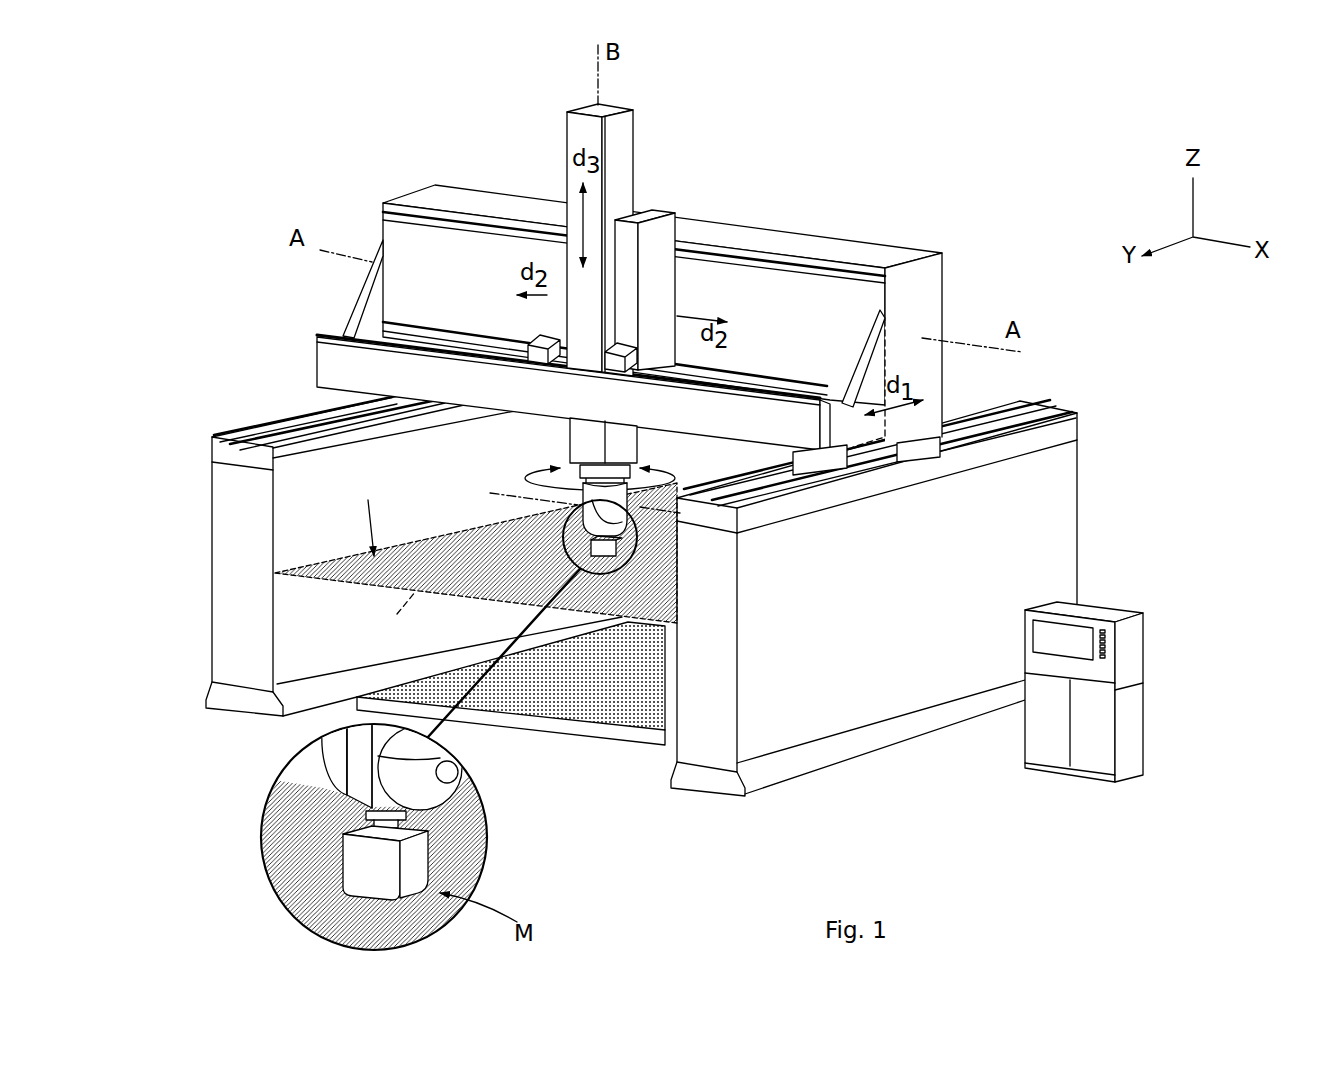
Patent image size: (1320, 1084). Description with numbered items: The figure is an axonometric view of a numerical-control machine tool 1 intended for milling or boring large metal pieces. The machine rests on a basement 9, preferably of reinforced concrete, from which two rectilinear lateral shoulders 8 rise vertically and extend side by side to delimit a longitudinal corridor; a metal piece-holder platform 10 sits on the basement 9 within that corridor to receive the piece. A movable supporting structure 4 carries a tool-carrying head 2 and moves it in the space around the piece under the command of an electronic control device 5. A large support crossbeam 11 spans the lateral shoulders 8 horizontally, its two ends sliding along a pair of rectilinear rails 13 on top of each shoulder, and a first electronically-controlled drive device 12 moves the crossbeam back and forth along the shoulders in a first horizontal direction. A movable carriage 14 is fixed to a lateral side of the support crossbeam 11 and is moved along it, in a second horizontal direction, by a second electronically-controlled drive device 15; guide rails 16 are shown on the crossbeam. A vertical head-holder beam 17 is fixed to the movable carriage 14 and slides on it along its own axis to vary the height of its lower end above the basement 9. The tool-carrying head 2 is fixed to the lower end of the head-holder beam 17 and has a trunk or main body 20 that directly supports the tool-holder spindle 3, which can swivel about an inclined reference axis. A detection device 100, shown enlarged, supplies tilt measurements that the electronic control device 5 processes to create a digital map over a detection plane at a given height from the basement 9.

The numerical-control machine tool 1 is at (233, 233).
The tool-carrying head 2 is at (630, 533).
The tool-holder spindle 3 is at (365, 793).
The movable supporting structure 4 is at (830, 226).
The electronic control device 5 is at (1132, 653).
The lateral shoulders 8 is at (235, 544).
The basement 9 is at (330, 711).
The piece-holder platform 10 is at (555, 700).
The support crossbeam 11 is at (465, 197).
The first electronically-controlled drive device 12 is at (363, 400).
The rectilinear rails 13 is at (255, 440).
The movable carriage 14 is at (647, 212).
The second electronically-controlled drive device 15 is at (684, 286).
The crossbeam guide rails 16 is at (457, 318).
The head-holder beam 17 is at (618, 135).
The trunk or main body 20 is at (318, 757).
The detection device 100 is at (366, 858).